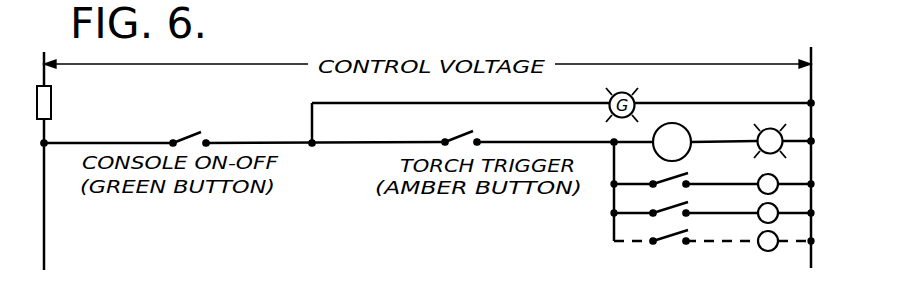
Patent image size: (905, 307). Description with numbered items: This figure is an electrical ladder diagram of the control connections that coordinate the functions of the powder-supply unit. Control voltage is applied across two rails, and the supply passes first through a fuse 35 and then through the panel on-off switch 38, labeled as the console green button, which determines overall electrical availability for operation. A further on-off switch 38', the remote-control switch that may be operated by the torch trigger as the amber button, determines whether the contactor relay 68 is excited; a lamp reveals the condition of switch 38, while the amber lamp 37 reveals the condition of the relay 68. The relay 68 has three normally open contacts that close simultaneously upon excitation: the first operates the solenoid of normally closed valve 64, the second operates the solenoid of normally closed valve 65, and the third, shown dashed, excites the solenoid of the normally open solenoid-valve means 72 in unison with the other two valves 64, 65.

The fuse 35 is at (52, 102).
The on-off switch 38 is at (209, 121).
The further on-off switch 38' is at (469, 125).
The contactor relay 68 is at (676, 123).
The amber lamp 37 is at (756, 124).
The normally closed valve 64 is at (760, 175).
The normally closed valve 65 is at (760, 205).
The normally open solenoid-valve means 72 is at (760, 250).